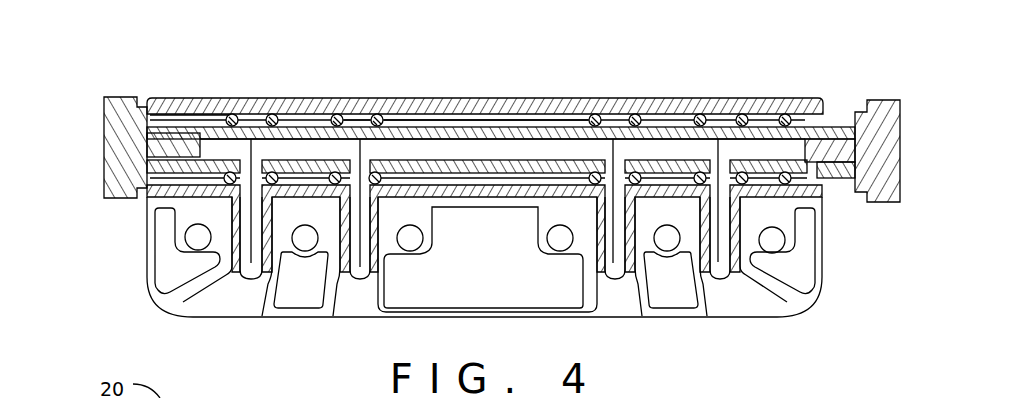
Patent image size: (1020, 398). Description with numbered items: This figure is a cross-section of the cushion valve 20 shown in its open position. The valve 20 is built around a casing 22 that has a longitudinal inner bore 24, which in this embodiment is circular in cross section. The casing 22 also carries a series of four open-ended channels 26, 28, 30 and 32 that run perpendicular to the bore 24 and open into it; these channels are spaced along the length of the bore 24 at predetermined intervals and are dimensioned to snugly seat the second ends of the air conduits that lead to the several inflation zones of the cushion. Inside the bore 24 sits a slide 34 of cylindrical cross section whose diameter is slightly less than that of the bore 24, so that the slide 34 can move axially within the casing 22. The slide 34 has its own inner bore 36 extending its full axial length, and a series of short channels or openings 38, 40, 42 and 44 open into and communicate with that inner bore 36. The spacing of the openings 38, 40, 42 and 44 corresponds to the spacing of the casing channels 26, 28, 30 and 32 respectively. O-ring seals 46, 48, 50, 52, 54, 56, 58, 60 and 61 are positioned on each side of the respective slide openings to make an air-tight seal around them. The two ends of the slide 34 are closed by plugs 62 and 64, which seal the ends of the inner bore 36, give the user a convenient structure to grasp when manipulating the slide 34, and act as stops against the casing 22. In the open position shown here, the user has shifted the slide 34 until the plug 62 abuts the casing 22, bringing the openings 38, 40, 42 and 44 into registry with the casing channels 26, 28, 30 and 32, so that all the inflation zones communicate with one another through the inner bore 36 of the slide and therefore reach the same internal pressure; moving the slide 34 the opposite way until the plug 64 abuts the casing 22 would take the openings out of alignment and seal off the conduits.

The valve 20 is at (170, 90).
The casing 22 is at (723, 101).
The longitudinal inner bore 24 is at (800, 122).
The open-ended channel 26 is at (250, 264).
The open-ended channel 28 is at (361, 267).
The open-ended channel 30 is at (613, 264).
The open-ended channel 32 is at (718, 262).
The slide 34 is at (326, 124).
The inner bore 36 is at (518, 148).
The opening 38 is at (253, 122).
The opening 40 is at (362, 148).
The opening 42 is at (612, 140).
The opening 44 is at (790, 125).
The O ring seal 46 is at (216, 112).
The O ring seal 48 is at (294, 125).
The O ring seal 50 is at (357, 116).
The O ring seal 52 is at (402, 112).
The O ring seal 54 is at (563, 118).
The O ring seal 56 is at (633, 118).
The O ring seal 58 is at (691, 112).
The O ring seal 60 is at (748, 118).
The O ring seal 61 is at (785, 207).
The plug 62 is at (103, 152).
The plug 64 is at (895, 193).